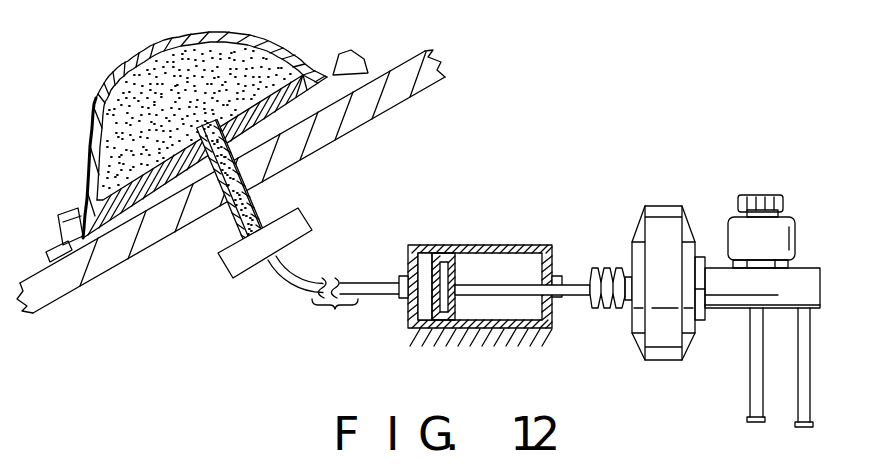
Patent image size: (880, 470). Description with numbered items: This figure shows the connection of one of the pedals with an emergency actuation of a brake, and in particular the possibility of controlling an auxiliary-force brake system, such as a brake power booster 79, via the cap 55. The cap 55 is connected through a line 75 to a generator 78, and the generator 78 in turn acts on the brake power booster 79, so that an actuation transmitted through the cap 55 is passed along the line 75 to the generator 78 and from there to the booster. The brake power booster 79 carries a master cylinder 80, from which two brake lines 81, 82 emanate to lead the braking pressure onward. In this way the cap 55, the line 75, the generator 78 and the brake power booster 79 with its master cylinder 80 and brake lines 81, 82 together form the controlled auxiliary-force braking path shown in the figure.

The cap 55 is at (130, 65).
The line 75 is at (296, 289).
The generator 78 is at (485, 245).
The brake power booster 79 is at (635, 242).
The master cylinder 80 is at (815, 284).
The brake line 81 is at (750, 392).
The brake line 82 is at (810, 392).